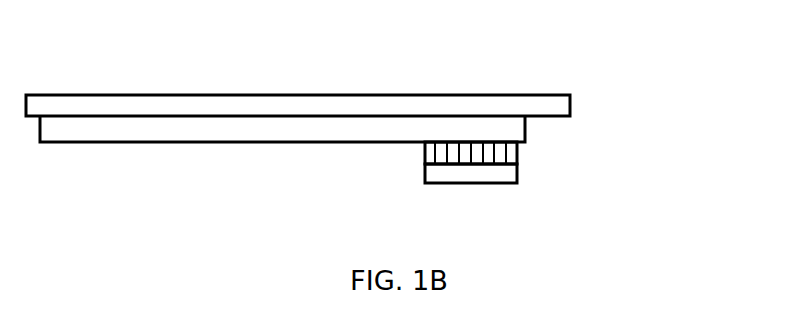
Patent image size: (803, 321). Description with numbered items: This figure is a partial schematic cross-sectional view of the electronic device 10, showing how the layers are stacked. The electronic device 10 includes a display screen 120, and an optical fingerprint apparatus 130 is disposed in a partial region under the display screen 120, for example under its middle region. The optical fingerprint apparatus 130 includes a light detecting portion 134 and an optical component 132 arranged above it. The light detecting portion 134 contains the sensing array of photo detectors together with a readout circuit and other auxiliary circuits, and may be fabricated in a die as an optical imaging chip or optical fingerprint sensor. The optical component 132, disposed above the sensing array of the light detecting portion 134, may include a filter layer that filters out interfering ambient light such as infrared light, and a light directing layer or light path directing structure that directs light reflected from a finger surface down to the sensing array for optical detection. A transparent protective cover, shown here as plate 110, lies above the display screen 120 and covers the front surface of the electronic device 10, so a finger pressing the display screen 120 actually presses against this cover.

The electronic device 10 is at (323, 36).
The cover plate 110 is at (538, 95).
The display screen 120 is at (313, 141).
The optical fingerprint apparatus 130 is at (571, 178).
The optical component 132 is at (517, 157).
The light detecting portion 134 is at (517, 173).